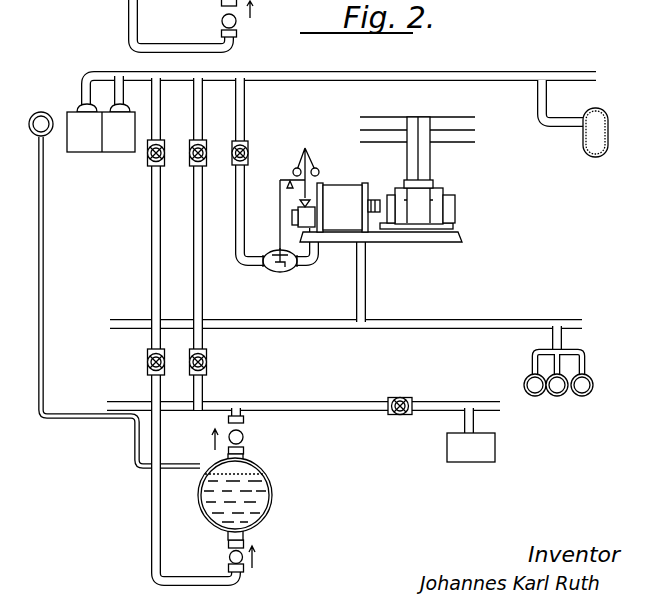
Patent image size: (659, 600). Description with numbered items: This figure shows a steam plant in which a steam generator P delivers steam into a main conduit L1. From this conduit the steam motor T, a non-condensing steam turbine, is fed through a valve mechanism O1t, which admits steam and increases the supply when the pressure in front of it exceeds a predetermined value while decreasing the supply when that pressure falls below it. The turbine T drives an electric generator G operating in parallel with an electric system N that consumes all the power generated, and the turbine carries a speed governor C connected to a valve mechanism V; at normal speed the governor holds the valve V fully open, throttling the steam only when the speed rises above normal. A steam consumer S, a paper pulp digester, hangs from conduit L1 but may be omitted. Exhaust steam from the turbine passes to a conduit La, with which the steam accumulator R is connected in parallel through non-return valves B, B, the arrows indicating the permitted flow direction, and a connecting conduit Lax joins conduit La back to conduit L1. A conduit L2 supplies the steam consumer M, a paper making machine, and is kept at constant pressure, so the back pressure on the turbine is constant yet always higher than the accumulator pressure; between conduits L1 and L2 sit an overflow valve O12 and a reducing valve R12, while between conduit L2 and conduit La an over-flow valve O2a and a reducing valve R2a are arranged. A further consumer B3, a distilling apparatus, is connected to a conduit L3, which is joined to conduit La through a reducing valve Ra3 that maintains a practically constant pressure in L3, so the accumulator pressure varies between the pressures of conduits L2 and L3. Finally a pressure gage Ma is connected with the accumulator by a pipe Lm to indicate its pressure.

The conduit L1 is at (297, 80).
The conduit L2 is at (325, 329).
The conduit L3 is at (420, 410).
The pipe Lm is at (44, 258).
The connecting conduit Lax is at (172, 329).
The conduit La is at (189, 410).
The steam consumer M is at (558, 372).
The pressure gage Ma is at (43, 106).
The generator P is at (80, 153).
The overflow valve O12 is at (147, 160).
The reducing valve R12 is at (190, 164).
The valve mechanism O1t is at (233, 165).
The over-flow valve O2a is at (147, 363).
The reducing valve R2a is at (207, 361).
The reducing valve Ra3 is at (389, 400).
The non-return valve B is at (196, 286).
The tank R is at (258, 467).
The steam consumer B3 is at (447, 442).
The steam consumer S is at (610, 129).
The valve mechanism V is at (280, 272).
The steam motor T is at (333, 187).
The speed governor C is at (308, 158).
The electric generator G is at (440, 196).
The electric system N is at (417, 141).